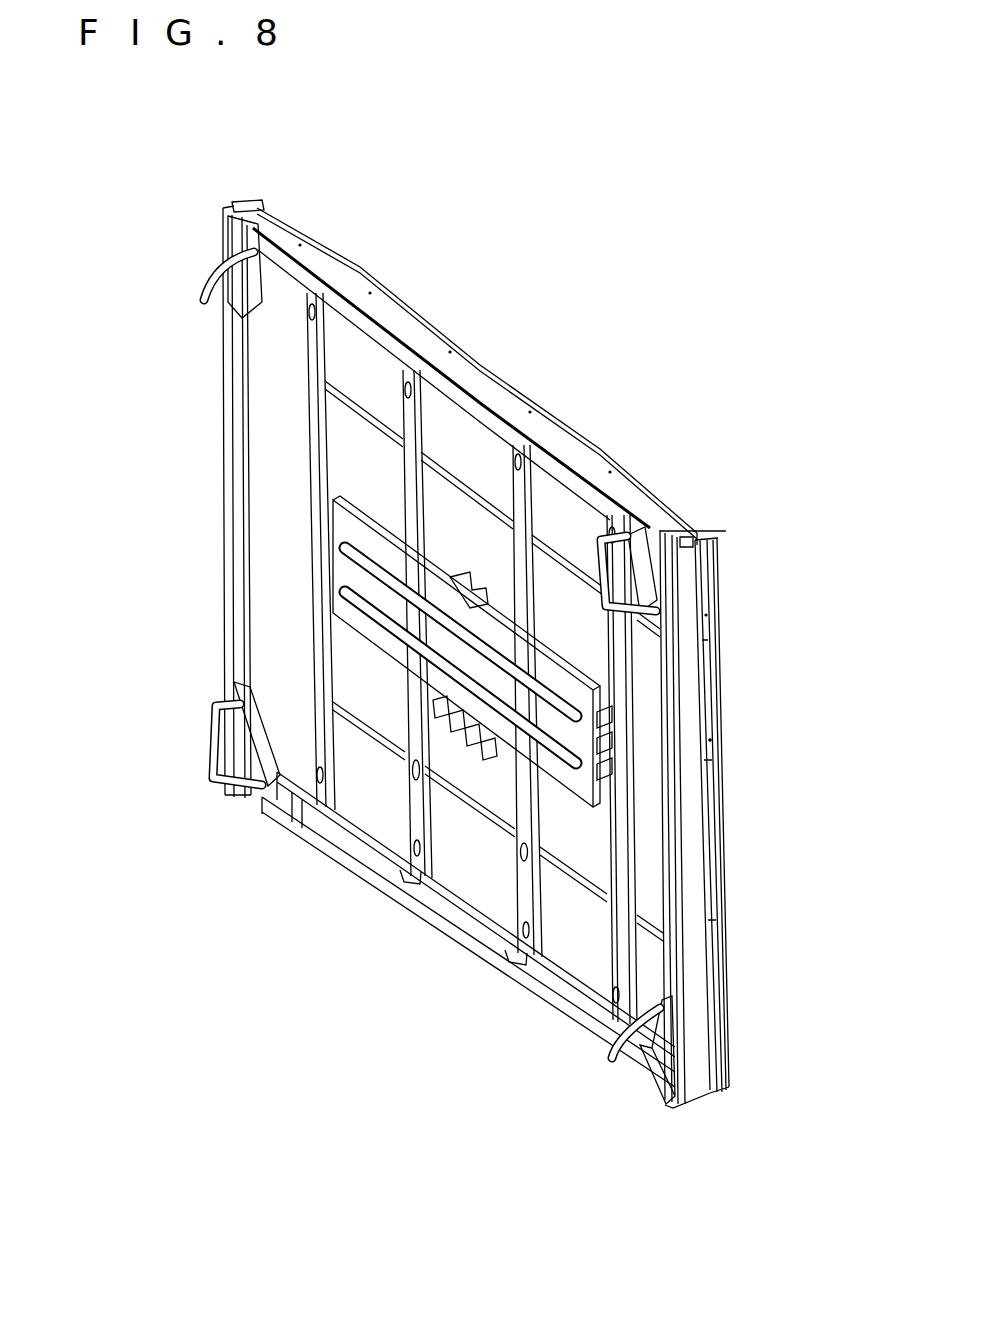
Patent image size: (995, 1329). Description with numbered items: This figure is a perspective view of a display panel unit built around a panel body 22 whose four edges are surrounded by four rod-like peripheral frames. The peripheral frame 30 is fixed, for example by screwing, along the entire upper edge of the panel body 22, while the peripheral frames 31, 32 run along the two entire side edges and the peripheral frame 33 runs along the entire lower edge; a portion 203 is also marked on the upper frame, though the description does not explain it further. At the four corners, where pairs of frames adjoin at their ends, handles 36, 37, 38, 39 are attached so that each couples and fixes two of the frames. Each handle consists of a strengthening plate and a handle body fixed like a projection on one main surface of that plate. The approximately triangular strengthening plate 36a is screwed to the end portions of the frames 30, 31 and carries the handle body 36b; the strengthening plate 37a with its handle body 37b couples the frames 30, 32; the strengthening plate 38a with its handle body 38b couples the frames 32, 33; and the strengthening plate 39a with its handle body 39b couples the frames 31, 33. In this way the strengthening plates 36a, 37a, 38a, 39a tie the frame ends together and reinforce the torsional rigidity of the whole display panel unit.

The panel body 22 is at (492, 893).
The peripheral frame 30 is at (485, 385).
The frame flange portion 203 is at (560, 407).
The peripheral frame 31 is at (235, 578).
The peripheral frame 32 is at (697, 727).
The peripheral frame 33 is at (365, 868).
The handle 36 is at (147, 266).
The strengthening plate 36a is at (233, 247).
The handle body 36b is at (213, 283).
The handle 37 is at (698, 520).
The strengthening plate 37a is at (640, 580).
The handle body 37b is at (648, 585).
The handle 38 is at (616, 1104).
The strengthening plate 38a is at (650, 1063).
The handle body 38b is at (623, 1048).
The handle 39 is at (146, 764).
The strengthening plate 39a is at (248, 757).
The handle body 39b is at (232, 775).